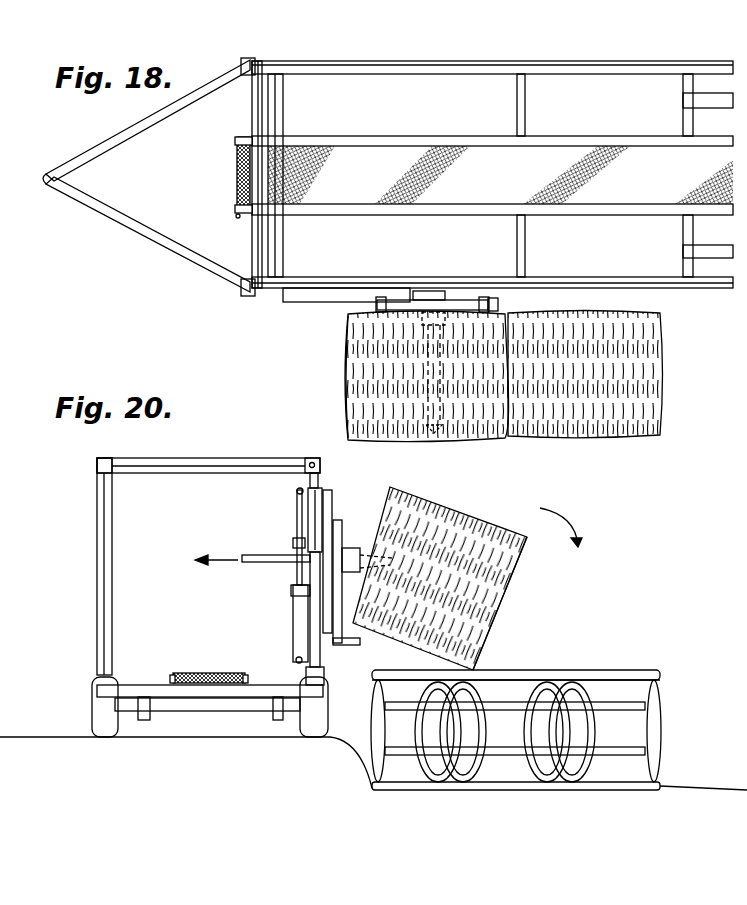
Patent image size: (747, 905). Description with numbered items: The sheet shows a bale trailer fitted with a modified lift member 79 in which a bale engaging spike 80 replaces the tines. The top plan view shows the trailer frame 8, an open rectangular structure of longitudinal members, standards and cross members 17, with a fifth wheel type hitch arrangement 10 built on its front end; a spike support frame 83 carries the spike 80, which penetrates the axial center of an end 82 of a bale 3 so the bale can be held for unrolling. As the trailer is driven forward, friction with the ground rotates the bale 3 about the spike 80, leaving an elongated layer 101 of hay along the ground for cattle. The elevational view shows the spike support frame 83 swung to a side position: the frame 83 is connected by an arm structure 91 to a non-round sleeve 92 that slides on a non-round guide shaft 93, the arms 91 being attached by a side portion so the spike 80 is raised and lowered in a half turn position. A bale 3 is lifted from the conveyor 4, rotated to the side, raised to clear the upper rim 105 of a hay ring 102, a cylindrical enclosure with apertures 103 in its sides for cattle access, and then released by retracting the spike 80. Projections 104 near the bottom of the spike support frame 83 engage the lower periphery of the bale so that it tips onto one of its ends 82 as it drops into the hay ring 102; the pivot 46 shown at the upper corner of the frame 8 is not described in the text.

In FIG. 18, the bale 3 is at (356, 388).
In FIG. 20, the bale 3 is at (476, 522).
In FIG. 18, the conveyor 4 is at (372, 160).
In FIG. 20, the conveyor 4 is at (206, 672).
In FIG. 18, the trailer frame 8 is at (441, 60).
In FIG. 20, the trailer frame 8 is at (98, 530).
In FIG. 18, the hitch arrangement 10 is at (92, 222).
In FIG. 18, the cross members 17 is at (522, 104).
In FIG. 20, the pivot bracket 46 is at (308, 460).
In FIG. 18, the modified lift member 79 is at (497, 304).
In FIG. 18, the bale engaging spike 80 is at (420, 434).
In FIG. 20, the bale engaging spike 80 is at (390, 568).
In FIG. 18, the end of the bale 82 is at (352, 312).
In FIG. 20, the end of the bale 82 is at (519, 578).
In FIG. 18, the spike support frame 83 is at (458, 300).
In FIG. 20, the spike support frame 83 is at (341, 530).
In FIG. 20, the arm structure 91 is at (334, 492).
In FIG. 20, the non-round sleeve 92 is at (306, 510).
In FIG. 20, the non-round guide shaft 93 is at (300, 606).
In FIG. 18, the elongated layer of hay 101 is at (607, 422).
In FIG. 20, the hay ring 102 is at (607, 670).
In FIG. 20, the apertures 103 is at (590, 722).
In FIG. 20, the projections 104 is at (344, 646).
In FIG. 20, the upper rim 105 is at (660, 678).